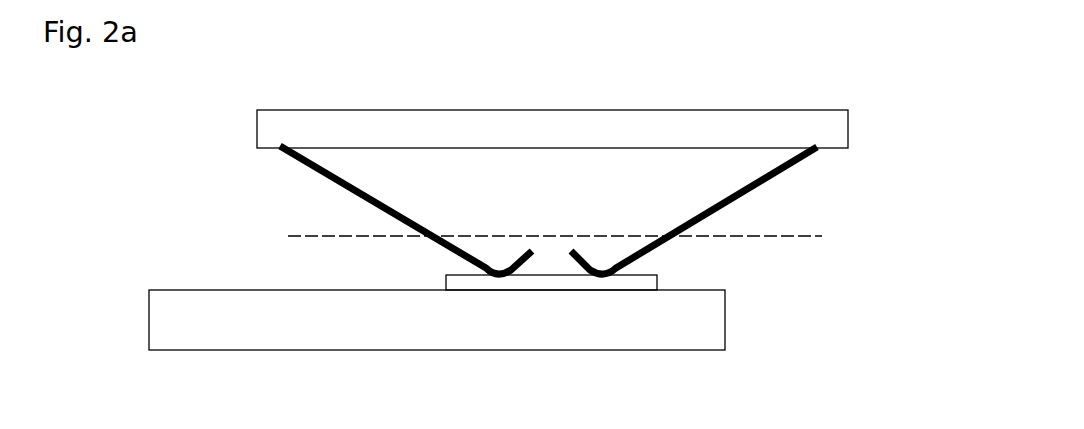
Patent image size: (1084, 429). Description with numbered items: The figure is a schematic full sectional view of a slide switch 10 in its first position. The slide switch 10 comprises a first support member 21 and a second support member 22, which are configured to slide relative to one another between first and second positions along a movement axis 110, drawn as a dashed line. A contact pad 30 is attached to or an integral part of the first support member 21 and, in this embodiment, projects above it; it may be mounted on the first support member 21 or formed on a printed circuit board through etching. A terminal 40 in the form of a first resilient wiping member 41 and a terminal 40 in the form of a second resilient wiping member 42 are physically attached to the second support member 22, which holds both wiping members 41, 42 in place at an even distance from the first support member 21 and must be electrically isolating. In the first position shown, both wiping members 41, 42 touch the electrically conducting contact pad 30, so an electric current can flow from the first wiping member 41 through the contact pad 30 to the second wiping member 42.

The slide switch 10 is at (185, 109).
The second support member 22 is at (818, 128).
The first support member 21 is at (687, 327).
The contact pad 30 is at (562, 282).
The terminal 40 is at (523, 210).
The first resilient wiping member 41 is at (322, 178).
The second resilient wiping member 42 is at (730, 208).
The movement axis 110 is at (777, 236).